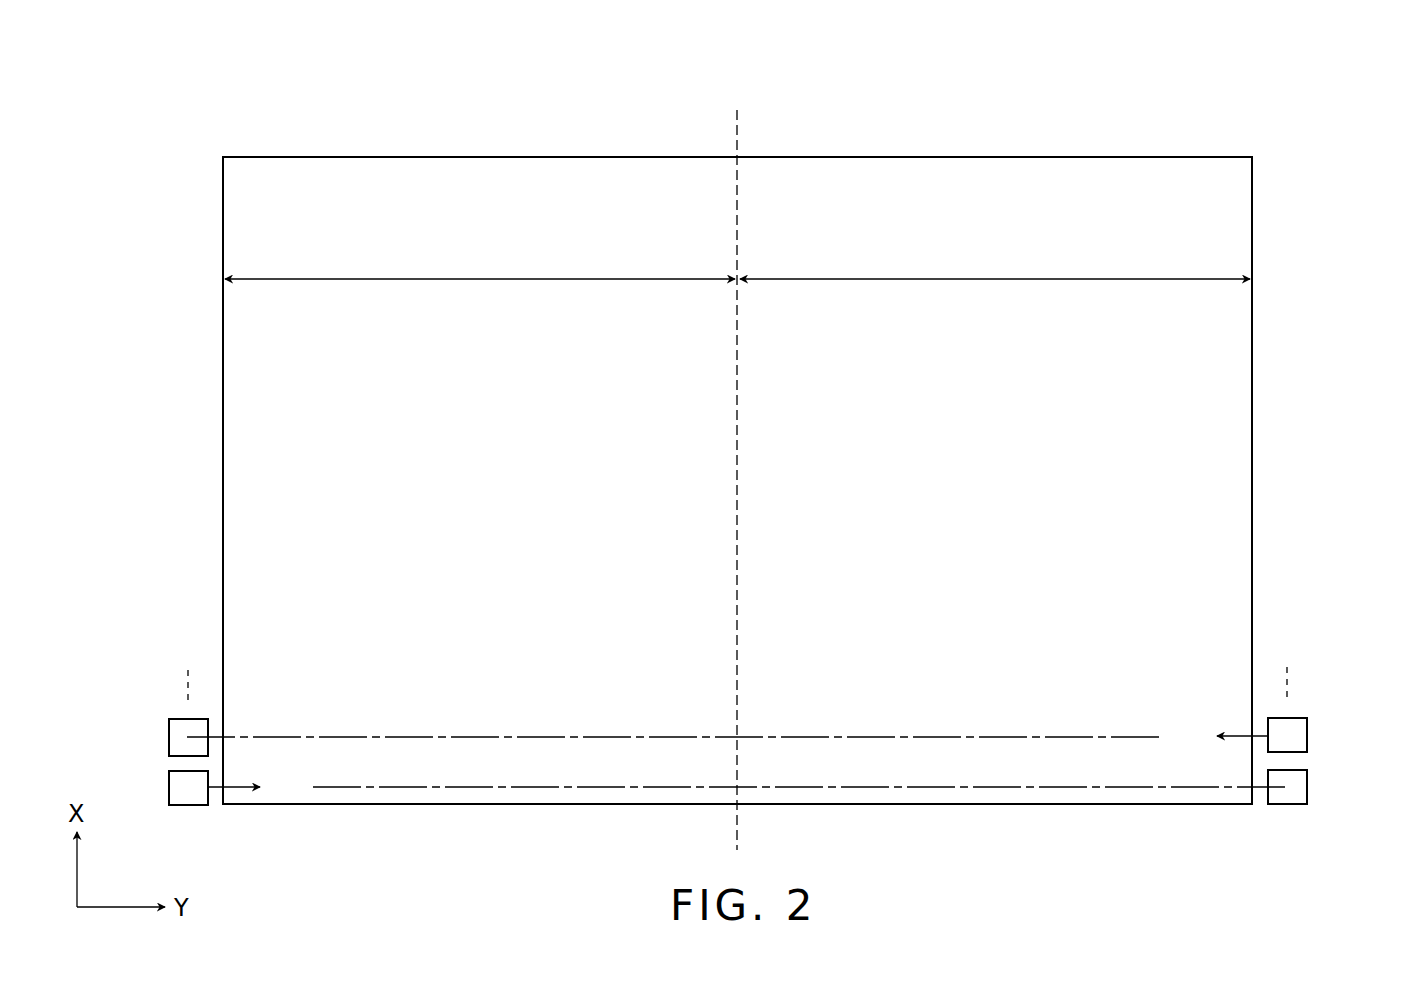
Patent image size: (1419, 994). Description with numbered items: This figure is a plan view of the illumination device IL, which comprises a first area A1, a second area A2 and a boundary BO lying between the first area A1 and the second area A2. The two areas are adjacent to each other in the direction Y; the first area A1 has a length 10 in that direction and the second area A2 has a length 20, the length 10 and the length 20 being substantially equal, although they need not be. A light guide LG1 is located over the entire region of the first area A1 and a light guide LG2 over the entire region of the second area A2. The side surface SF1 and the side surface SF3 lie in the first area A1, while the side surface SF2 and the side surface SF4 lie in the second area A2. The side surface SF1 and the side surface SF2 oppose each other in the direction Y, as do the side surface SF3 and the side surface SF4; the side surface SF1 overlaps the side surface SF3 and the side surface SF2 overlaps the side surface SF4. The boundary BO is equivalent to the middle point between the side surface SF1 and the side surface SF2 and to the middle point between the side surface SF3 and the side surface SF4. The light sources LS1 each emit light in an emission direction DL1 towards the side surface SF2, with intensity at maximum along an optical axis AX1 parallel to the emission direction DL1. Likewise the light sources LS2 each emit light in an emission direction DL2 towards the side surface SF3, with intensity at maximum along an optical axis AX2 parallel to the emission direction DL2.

The illumination device IL is at (160, 124).
The side surface SF1 is at (161, 480).
The side surface SF3 is at (223, 405).
The side surface SF2 is at (1315, 480).
The side surface SF4 is at (1252, 366).
The light guide LG1 is at (737, 134).
The light guide LG2 is at (1075, 172).
The first area A1 is at (498, 166).
The second area A2 is at (930, 166).
The boundary BO is at (739, 463).
The length 10 is at (480, 264).
The length 20 is at (995, 263).
The optical axis AX1 is at (1100, 787).
The optical axis AX2 is at (640, 735).
The light source LS1 is at (1300, 733).
The light source LS2 is at (176, 737).
The emission direction DL1 is at (1232, 718).
The emission direction DL2 is at (245, 770).